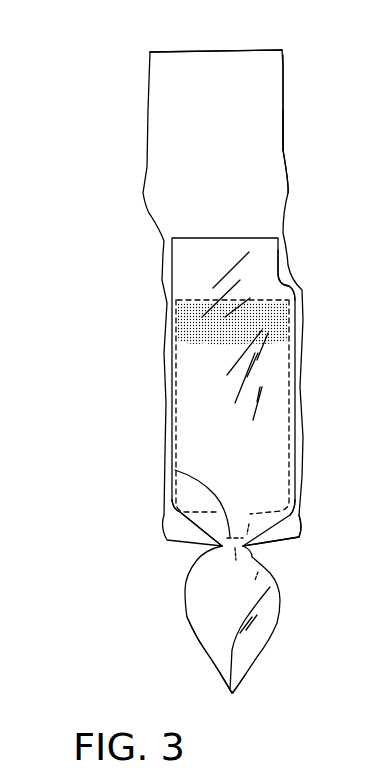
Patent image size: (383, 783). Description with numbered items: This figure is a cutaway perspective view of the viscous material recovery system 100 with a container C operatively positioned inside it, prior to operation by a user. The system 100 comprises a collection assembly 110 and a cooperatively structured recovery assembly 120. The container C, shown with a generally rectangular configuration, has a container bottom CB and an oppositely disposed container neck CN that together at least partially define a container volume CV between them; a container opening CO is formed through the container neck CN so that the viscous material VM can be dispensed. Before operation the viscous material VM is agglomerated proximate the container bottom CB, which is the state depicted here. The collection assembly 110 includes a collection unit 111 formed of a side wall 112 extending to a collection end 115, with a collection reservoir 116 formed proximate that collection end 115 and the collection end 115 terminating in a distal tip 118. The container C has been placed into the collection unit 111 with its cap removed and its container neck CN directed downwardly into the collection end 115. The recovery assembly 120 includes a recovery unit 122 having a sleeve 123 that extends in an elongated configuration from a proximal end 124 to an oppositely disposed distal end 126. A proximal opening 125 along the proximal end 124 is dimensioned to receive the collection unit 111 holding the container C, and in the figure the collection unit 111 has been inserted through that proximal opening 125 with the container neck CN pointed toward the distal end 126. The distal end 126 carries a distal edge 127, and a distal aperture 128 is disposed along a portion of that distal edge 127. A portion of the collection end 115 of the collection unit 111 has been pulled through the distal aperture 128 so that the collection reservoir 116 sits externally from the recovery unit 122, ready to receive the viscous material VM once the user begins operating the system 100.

The viscous material recovery system 100 is at (128, 82).
The collection assembly 110 is at (247, 636).
The collection unit 111 is at (284, 279).
The side wall 112 is at (230, 265).
The collection end 115 is at (222, 658).
The collection reservoir 116 is at (235, 608).
The distal tip 118 is at (236, 694).
The recovery assembly 120 is at (136, 193).
The recovery unit 122 is at (284, 150).
The sleeve 123 is at (233, 159).
The proximal end 124 is at (284, 67).
The proximal opening 125 is at (203, 50).
The distal end 126 is at (256, 543).
The distal edge 127 is at (287, 547).
The distal aperture 128 is at (217, 548).
The container bottom CB is at (190, 298).
The container volume CV is at (180, 405).
The container opening CO is at (175, 470).
The viscous material VM is at (268, 335).
The container C is at (297, 433).
The container neck CN is at (253, 522).